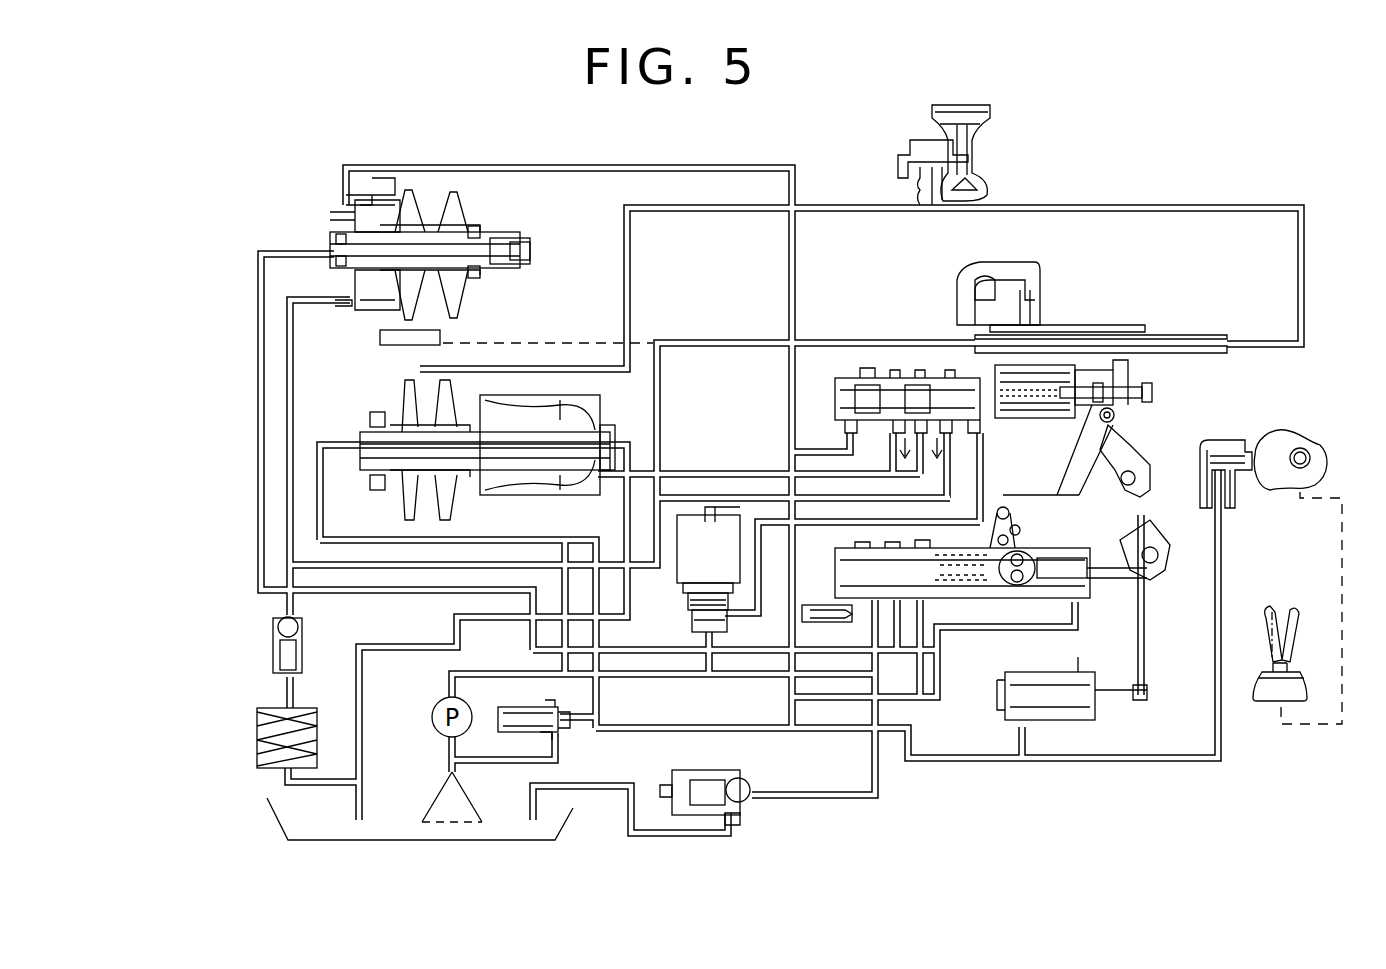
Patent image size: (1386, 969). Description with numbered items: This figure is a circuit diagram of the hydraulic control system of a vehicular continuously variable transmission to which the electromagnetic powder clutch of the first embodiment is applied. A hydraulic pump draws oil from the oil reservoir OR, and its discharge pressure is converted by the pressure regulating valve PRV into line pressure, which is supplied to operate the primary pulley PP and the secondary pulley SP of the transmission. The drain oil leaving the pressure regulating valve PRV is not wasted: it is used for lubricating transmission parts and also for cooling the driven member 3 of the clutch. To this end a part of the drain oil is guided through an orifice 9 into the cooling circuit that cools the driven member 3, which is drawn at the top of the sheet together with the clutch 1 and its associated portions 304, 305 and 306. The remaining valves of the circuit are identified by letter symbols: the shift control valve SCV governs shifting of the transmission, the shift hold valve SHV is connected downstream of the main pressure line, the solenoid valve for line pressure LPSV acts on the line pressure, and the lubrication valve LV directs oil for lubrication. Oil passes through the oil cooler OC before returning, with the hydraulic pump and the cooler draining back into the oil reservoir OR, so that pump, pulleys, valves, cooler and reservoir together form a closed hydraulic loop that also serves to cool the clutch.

The fuel injection nozzle 1 is at (1000, 110).
The driven member 3 is at (930, 112).
The orifice 9 is at (912, 188).
The valve member 304 is at (963, 177).
The pressure chamber 305 is at (953, 138).
The spring chamber 306 is at (982, 192).
The primary pulley PP is at (480, 223).
The secondary pulley SP is at (397, 490).
The pressure regulating valve PRV is at (905, 365).
The shift control valve SCV is at (960, 603).
The solenoid valve for line pressure LPSV is at (673, 585).
The shift hold valve SHV is at (692, 768).
The lubrication valve LV is at (520, 740).
The oil cooler OC is at (247, 757).
The oil reservoir OR is at (397, 847).